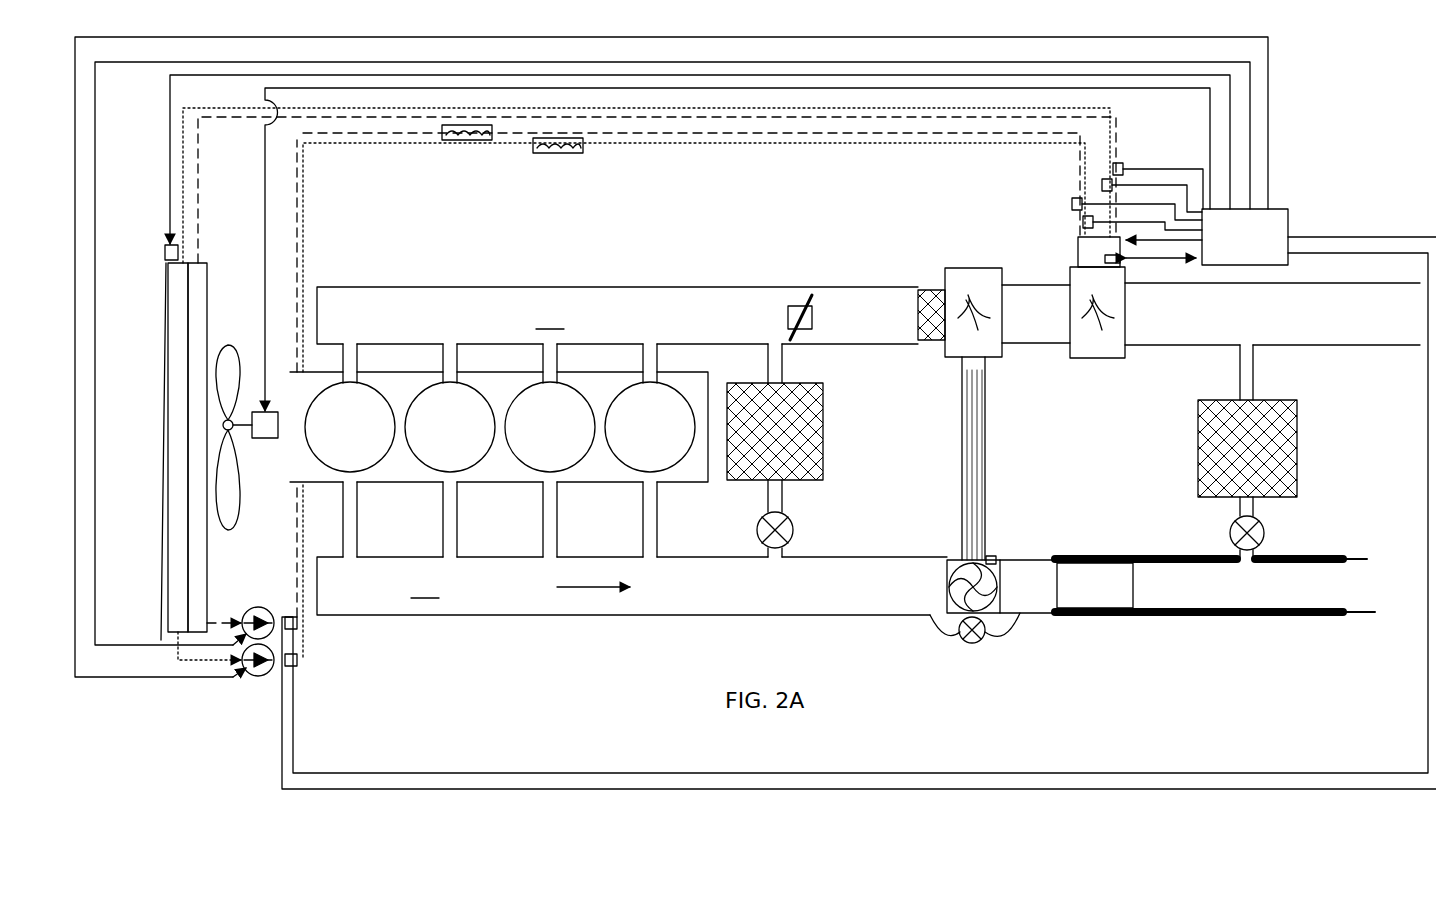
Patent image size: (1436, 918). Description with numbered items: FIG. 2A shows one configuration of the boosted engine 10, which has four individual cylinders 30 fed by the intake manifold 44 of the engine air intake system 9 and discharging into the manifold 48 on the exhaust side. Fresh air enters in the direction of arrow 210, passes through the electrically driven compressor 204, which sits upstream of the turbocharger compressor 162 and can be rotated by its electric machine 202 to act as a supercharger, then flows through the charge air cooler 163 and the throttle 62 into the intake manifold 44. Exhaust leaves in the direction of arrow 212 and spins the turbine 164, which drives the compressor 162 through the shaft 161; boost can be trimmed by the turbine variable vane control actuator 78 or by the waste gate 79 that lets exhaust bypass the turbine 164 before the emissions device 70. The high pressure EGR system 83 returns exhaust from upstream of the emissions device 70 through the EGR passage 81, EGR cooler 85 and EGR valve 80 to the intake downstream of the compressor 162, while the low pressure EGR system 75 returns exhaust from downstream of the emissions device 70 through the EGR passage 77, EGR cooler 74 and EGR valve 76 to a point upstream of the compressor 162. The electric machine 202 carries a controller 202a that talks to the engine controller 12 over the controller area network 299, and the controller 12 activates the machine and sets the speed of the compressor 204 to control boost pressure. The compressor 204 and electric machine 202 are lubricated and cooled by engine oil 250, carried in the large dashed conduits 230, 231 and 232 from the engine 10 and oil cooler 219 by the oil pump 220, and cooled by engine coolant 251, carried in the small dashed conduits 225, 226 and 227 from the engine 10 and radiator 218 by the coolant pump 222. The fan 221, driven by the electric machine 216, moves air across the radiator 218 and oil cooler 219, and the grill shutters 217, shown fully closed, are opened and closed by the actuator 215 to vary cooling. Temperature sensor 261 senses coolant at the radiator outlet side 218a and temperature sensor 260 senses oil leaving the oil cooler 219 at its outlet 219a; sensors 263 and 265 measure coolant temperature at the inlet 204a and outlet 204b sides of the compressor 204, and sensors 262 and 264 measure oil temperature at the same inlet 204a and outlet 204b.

The engine air intake system 9 is at (792, 208).
The engine 10 is at (505, 268).
The controller 12 is at (1281, 237).
The cylinders 30 is at (342, 483).
The intake manifold 44 is at (617, 315).
The exhaust manifold 48 is at (632, 586).
The throttle 62 is at (800, 303).
The emissions device 70 is at (1215, 585).
The EGR cooler 74 is at (1297, 440).
The low pressure EGR system 75 is at (1330, 466).
The EGR valve 76 is at (1264, 528).
The EGR passage 77 is at (1243, 370).
The turbine variable vane control actuator 78 is at (992, 560).
The waste gate 79 is at (985, 636).
The EGR valve 80 is at (762, 520).
The EGR passage 81 is at (768, 365).
The high pressure EGR system 83 is at (813, 500).
The EGR cooler 85 is at (823, 425).
The shaft 161 is at (985, 485).
The turbocharger compressor 162 is at (960, 268).
The charge air cooler 163 is at (930, 290).
The turbine 164 is at (975, 558).
The electric machine 202 is at (1078, 258).
The controller 202a is at (1125, 258).
The electrically driven compressor 204 is at (1090, 358).
The inlet side 204a is at (1068, 277).
The outlet side 204b is at (1125, 288).
The arrow 210 is at (1255, 320).
The arrow 212 is at (588, 585).
The actuator 215 is at (165, 250).
The electric machine 216 is at (265, 440).
The grill shutters 217 is at (164, 303).
The radiator 218 is at (176, 283).
The outlet side 218a is at (180, 628).
The oil cooler 219 is at (195, 316).
The radiator second outlet 219a is at (200, 622).
The oil pump 220 is at (250, 607).
The fan 221 is at (227, 520).
The coolant pump 222 is at (262, 677).
The passage 225 is at (300, 628).
The passage 226 is at (305, 228).
The passage 227 is at (1118, 135).
The passage 230 is at (297, 583).
The passage 231 is at (298, 180).
The passage 232 is at (1118, 112).
The engine oil 250 is at (470, 141).
The engine coolant 251 is at (560, 154).
The temperature sensor 260 is at (300, 662).
The temperature sensor 261 is at (295, 675).
The temperature sensor 262 is at (1083, 222).
The temperature sensor 263 is at (1072, 203).
The temperature sensor 264 is at (1102, 184).
The temperature sensor 265 is at (1113, 165).
The controller area network 299 is at (1190, 262).